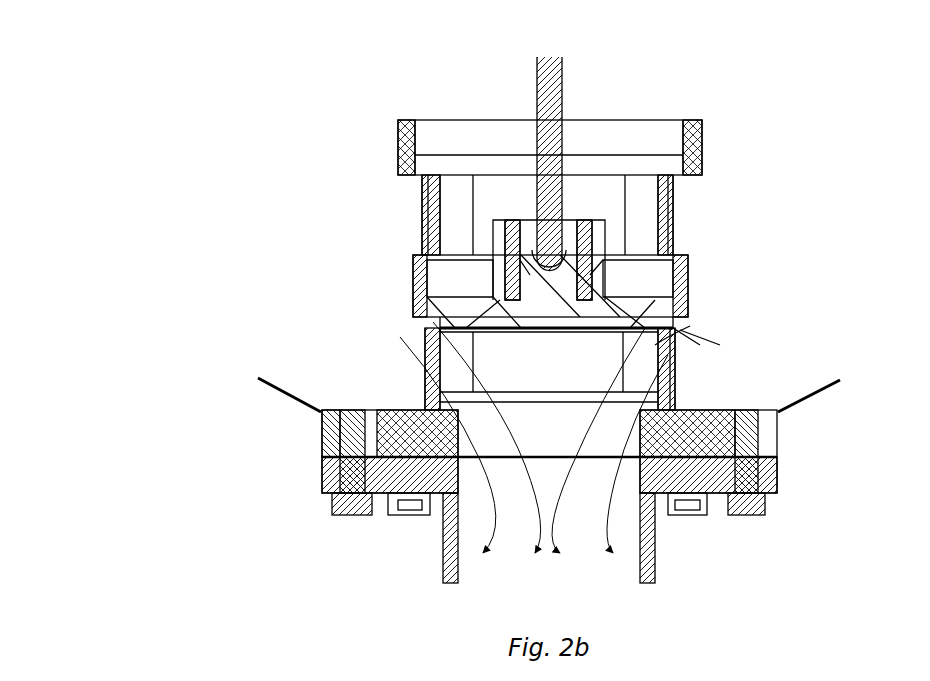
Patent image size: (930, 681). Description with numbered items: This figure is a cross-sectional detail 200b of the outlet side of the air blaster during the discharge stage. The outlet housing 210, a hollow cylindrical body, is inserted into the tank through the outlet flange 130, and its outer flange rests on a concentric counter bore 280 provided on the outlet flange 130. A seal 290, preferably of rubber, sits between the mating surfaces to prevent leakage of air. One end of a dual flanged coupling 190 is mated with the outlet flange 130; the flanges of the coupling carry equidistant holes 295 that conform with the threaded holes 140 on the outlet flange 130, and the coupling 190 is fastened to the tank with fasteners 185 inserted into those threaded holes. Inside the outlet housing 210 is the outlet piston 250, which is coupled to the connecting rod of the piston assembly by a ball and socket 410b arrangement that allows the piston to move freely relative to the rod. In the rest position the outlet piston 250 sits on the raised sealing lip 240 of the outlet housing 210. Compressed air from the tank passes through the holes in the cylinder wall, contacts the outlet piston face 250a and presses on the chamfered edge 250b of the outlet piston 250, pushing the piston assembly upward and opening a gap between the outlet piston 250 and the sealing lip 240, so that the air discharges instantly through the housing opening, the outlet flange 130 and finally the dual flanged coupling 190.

The cross-sectional detail of the outlet side during discharge stage 200b is at (146, 77).
The outlet housing 210 is at (702, 152).
The ball and socket 410b is at (562, 245).
The outlet piston 250 is at (692, 246).
The outlet piston face 250a is at (680, 345).
The chamfered edge 250b is at (679, 326).
The raised sealing lip 240 is at (422, 341).
The seal 290 is at (322, 445).
The concentric counter bore 280 is at (322, 465).
The equidistant holes 295 is at (322, 494).
The fasteners 185 is at (350, 518).
The dual flanged coupling 190 is at (664, 549).
The threaded holes 140 is at (772, 424).
The outlet flange 130 is at (790, 450).